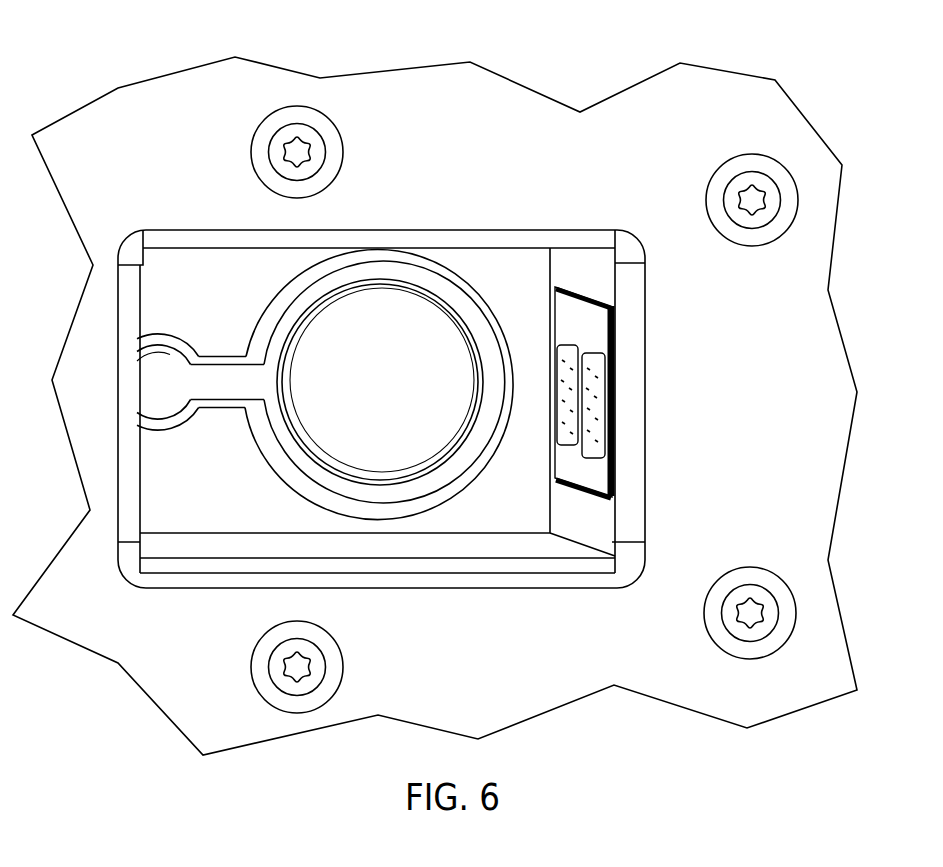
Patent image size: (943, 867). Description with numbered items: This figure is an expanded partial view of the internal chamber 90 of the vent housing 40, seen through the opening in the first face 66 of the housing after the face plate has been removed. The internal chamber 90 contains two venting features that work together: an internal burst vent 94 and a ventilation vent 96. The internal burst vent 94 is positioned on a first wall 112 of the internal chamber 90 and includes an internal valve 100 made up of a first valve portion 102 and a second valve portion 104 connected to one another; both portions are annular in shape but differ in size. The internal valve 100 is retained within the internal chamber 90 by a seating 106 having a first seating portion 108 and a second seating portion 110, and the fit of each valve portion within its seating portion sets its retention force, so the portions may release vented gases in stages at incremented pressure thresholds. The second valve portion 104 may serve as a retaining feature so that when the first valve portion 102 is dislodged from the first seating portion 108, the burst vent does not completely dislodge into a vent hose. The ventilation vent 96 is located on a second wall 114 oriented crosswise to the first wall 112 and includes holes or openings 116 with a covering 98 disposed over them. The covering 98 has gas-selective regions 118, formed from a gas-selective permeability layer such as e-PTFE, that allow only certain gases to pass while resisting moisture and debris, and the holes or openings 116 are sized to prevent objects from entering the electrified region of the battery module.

The vent housing 40 is at (435, 383).
The first face 66 is at (117, 137).
The internal chamber 90 is at (409, 377).
The internal burst vent 94 is at (204, 435).
The ventilation vent 96 is at (630, 340).
The covering 98 is at (630, 392).
The internal valve 100 is at (402, 350).
The first valve portion 102 is at (377, 426).
The second valve portion 104 is at (200, 357).
The seating 106 is at (386, 348).
The first seating portion 108 is at (456, 283).
The second seating portion 110 is at (195, 347).
The first wall 112 is at (217, 281).
The second wall 114 is at (597, 284).
The holes or openings 116 is at (609, 372).
The gas-selective regions 118 is at (616, 436).